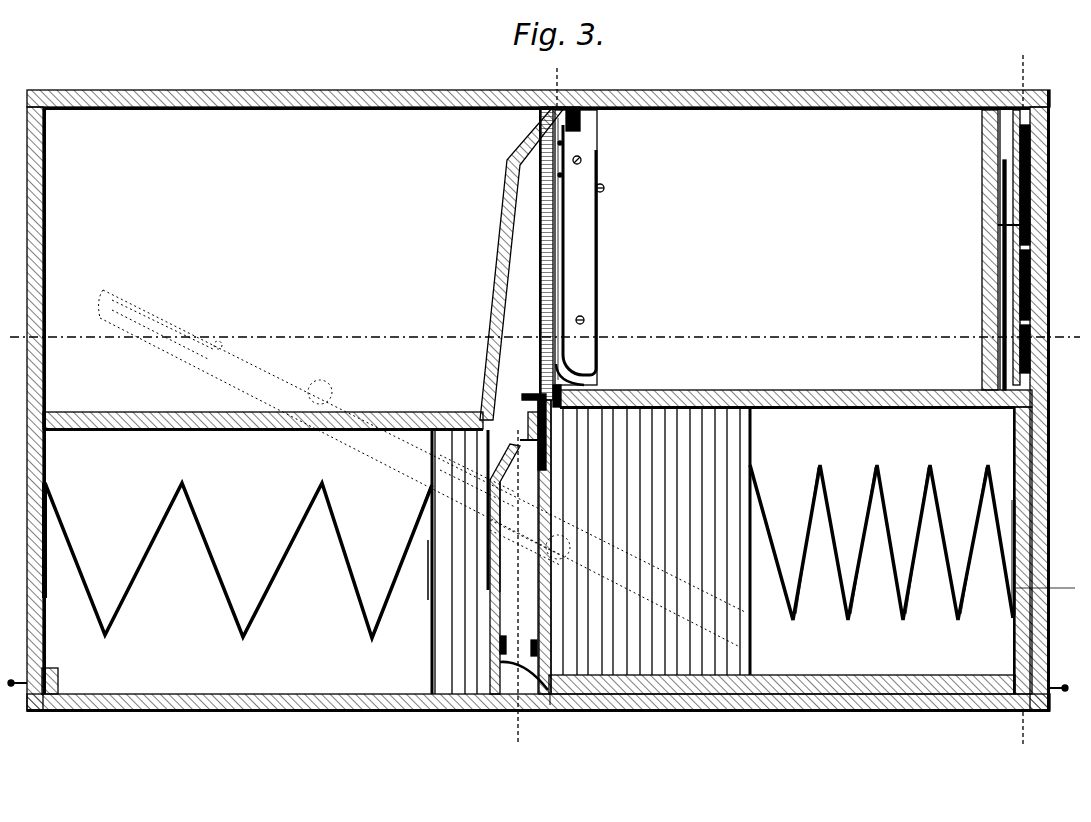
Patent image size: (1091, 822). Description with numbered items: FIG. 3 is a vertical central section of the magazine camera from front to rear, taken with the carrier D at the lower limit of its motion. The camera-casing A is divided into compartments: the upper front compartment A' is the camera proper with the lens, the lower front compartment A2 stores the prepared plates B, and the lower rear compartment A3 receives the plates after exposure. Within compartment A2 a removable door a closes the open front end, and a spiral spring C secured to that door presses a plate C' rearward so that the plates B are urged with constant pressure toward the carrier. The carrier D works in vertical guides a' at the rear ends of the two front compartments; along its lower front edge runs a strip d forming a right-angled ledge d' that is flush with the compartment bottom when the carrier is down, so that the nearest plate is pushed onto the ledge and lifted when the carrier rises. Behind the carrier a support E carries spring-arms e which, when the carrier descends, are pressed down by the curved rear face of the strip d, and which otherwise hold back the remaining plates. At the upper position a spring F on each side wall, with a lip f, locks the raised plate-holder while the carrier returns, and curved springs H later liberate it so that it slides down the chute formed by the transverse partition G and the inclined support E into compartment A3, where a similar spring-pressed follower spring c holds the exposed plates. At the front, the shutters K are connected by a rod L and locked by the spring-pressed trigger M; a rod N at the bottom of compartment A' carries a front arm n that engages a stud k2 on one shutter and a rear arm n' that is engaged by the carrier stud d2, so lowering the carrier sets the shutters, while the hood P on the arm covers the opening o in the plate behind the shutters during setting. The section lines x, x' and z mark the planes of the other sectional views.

The camera-casing A is at (536, 392).
The upper front compartment A' is at (512, 249).
The lower front compartment A2 is at (796, 532).
The lower rear compartment A3 is at (263, 553).
The prepared plate B is at (587, 550).
The spiral spring C is at (882, 542).
The follower plate C' is at (591, 551).
The left zigzag spring c is at (82, 595).
The carrier D is at (539, 590).
The support E is at (510, 565).
The spring F is at (548, 380).
The transverse partition G is at (497, 297).
The curved spring H is at (600, 355).
The shutter K is at (1030, 225).
The rod L is at (1030, 305).
The spring-pressed trigger M is at (1030, 350).
The rod N is at (522, 397).
The lateral arm n' is at (518, 437).
The opening o is at (1000, 152).
The hood P is at (1003, 285).
The lateral arm n is at (977, 250).
The stud k2 is at (998, 226).
The removable door a is at (1051, 587).
The vertical guide a' is at (536, 419).
The strip d is at (551, 715).
The ledge d' is at (782, 671).
The block d2 is at (531, 443).
The spring-arm e is at (524, 664).
The lip f is at (588, 385).
The section line x x is at (543, 337).
The section line x' x' is at (536, 407).
The section line z z is at (1020, 401).